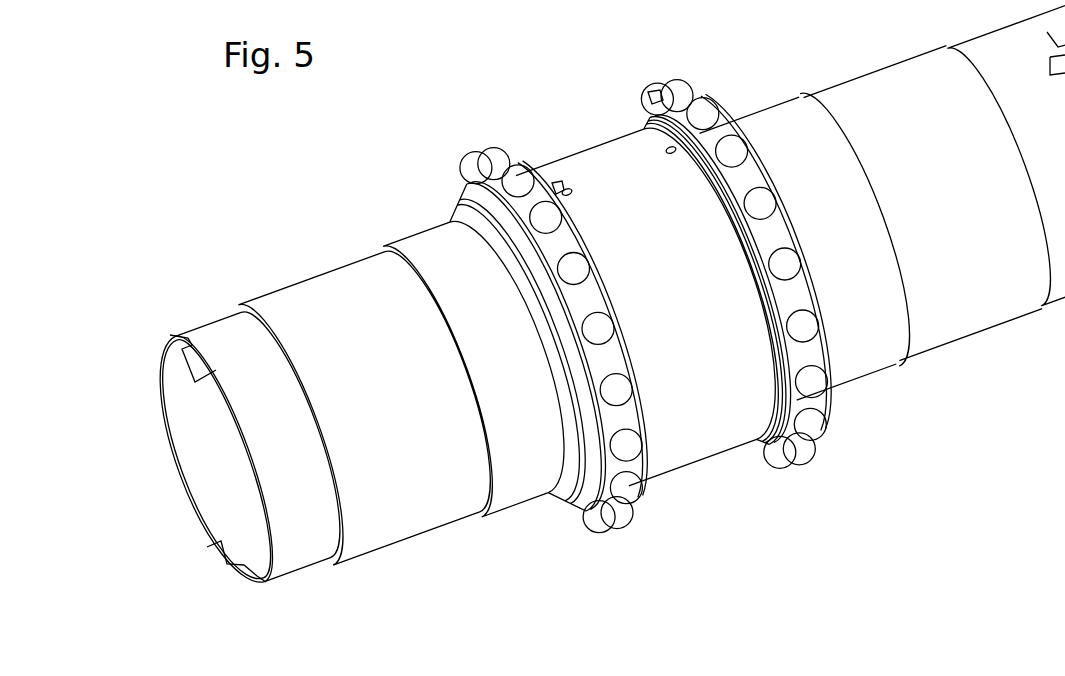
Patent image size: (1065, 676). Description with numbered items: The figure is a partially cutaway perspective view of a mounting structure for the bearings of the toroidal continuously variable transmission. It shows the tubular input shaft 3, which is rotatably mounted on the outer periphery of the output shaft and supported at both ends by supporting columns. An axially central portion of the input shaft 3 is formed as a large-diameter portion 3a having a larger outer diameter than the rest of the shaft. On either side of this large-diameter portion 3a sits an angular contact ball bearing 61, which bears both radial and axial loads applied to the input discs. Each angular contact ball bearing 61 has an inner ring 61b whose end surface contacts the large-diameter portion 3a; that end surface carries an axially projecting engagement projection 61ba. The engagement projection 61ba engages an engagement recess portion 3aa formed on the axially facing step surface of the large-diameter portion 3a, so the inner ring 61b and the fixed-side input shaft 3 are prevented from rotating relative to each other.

The input shaft 3 is at (390, 532).
The large-diameter portion 3a is at (677, 464).
The engagement recess portion 3aa is at (673, 154).
The angular contact ball bearing 61 is at (645, 313).
The inner ring 61b is at (777, 421).
The engagement projection 61ba is at (654, 96).